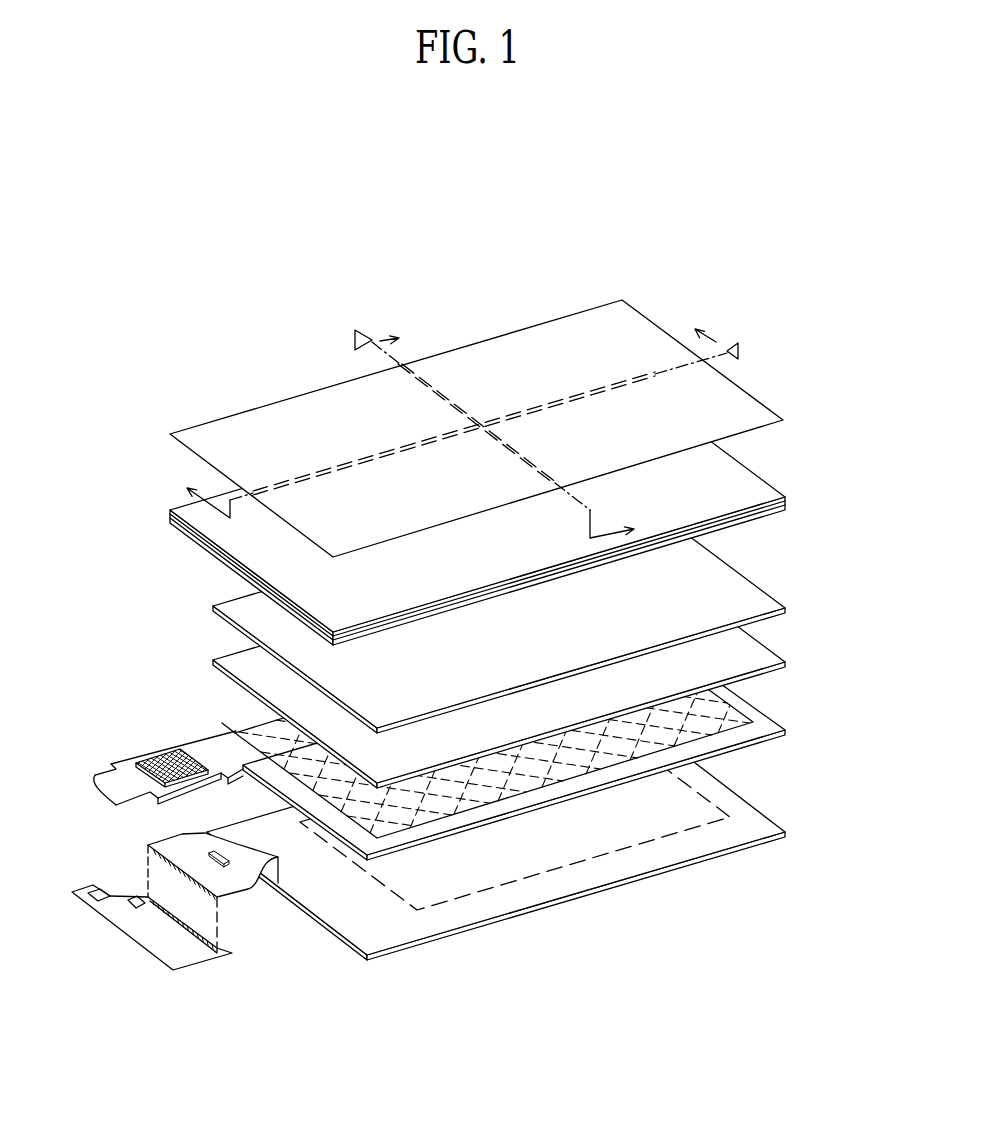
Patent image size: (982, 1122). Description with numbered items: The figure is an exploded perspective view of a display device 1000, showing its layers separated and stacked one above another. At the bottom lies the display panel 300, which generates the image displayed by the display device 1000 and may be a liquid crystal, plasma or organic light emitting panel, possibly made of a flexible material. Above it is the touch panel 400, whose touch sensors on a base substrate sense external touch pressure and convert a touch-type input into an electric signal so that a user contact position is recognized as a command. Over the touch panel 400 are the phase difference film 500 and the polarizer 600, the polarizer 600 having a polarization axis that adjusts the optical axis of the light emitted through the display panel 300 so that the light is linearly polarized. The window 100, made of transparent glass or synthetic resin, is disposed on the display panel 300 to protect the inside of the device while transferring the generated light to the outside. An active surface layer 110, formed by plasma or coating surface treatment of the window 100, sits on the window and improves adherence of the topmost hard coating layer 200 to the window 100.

The display device 1000 is at (493, 244).
The hard coating layer 200 is at (768, 412).
The active surface layer 110 is at (770, 485).
The window 100 is at (787, 504).
The polarizer 600 is at (769, 593).
The phase difference film 500 is at (769, 652).
The touch panel 400 is at (752, 708).
The display panel 300 is at (787, 833).